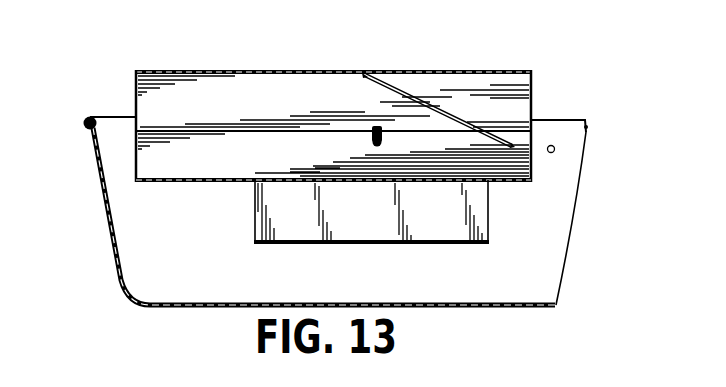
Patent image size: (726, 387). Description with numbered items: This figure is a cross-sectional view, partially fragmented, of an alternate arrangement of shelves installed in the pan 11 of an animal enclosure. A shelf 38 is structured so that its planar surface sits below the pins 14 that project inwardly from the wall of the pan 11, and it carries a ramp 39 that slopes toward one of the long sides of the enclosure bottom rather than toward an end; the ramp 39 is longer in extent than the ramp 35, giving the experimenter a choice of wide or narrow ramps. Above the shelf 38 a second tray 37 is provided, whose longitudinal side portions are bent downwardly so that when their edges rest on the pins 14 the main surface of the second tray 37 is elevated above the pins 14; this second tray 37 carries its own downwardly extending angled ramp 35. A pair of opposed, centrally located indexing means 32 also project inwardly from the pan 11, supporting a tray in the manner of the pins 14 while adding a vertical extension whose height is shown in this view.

The pan 11 is at (147, 310).
The pin 14 is at (554, 146).
The indexing means 32 is at (377, 128).
The ramp 35 is at (473, 128).
The second tray 37 is at (270, 70).
The shelf 38 is at (157, 187).
The ramp 39 is at (452, 213).